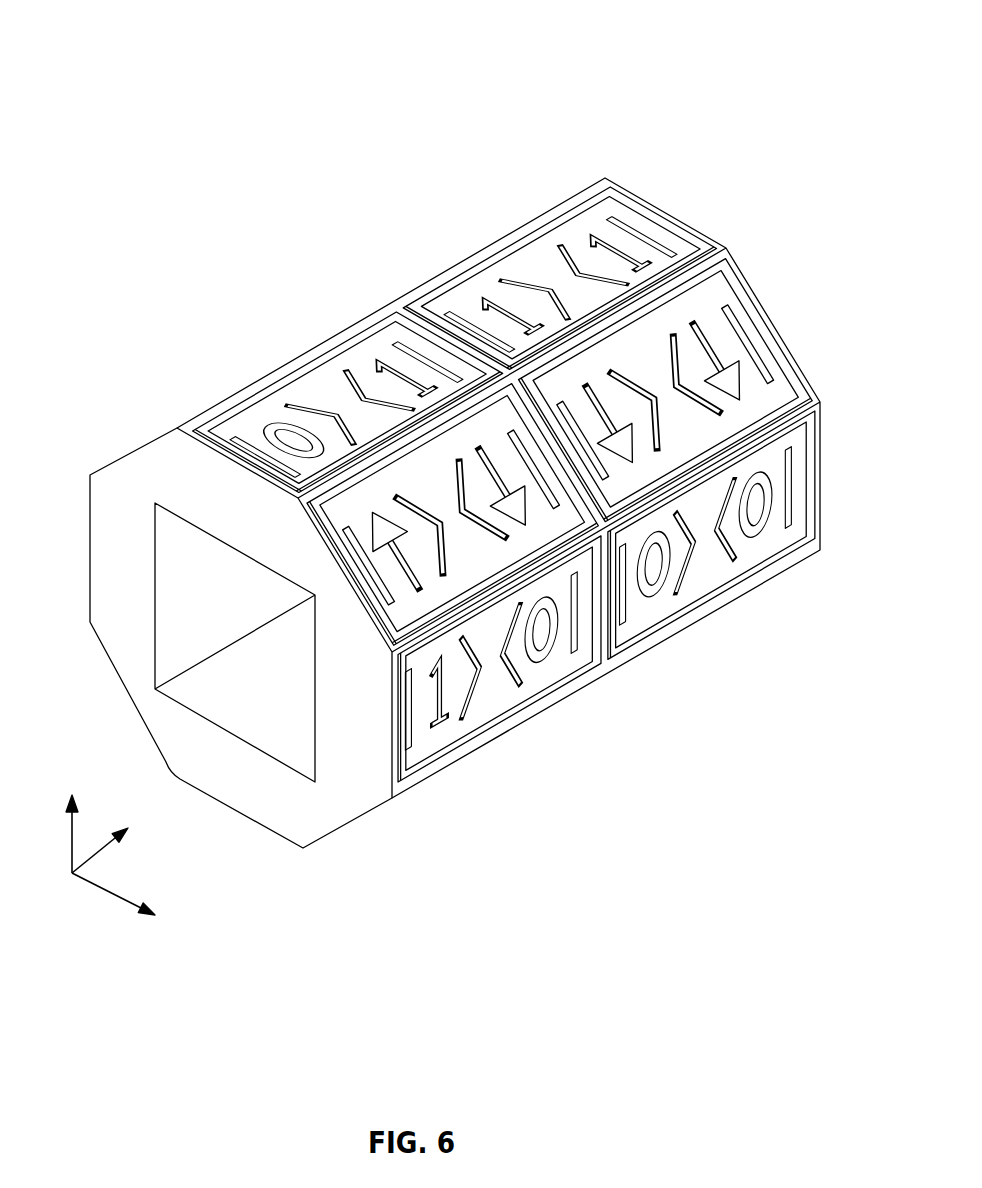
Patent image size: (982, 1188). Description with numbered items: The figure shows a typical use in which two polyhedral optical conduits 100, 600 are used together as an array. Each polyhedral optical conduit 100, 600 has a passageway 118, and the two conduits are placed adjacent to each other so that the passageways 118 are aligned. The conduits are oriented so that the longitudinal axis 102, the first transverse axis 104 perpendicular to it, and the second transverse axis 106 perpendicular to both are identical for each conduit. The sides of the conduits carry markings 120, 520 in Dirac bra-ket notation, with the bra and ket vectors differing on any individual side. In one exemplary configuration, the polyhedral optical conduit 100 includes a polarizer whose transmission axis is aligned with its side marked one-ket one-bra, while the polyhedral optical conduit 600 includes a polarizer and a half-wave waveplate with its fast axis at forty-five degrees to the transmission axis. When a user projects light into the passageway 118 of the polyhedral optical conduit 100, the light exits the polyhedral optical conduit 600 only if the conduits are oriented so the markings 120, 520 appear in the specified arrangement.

The polyhedral optical conduit 100 is at (199, 296).
The polyhedral optical conduit 600 is at (484, 220).
The markings 120 is at (559, 278).
The markings 520 is at (348, 402).
The passageway 118 is at (276, 706).
The longitudinal axis 102 is at (126, 843).
The first transverse axis 104 is at (73, 819).
The second transverse axis 106 is at (143, 904).